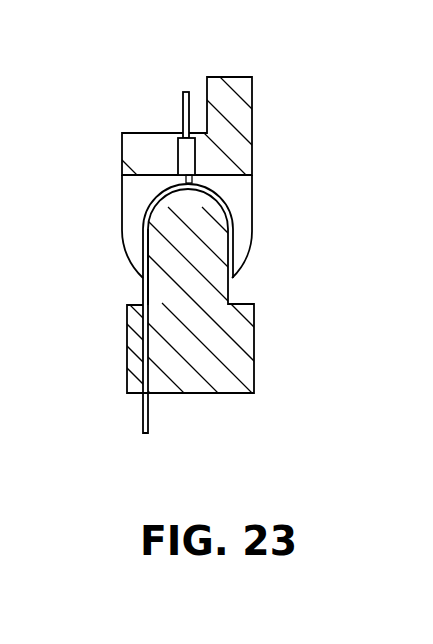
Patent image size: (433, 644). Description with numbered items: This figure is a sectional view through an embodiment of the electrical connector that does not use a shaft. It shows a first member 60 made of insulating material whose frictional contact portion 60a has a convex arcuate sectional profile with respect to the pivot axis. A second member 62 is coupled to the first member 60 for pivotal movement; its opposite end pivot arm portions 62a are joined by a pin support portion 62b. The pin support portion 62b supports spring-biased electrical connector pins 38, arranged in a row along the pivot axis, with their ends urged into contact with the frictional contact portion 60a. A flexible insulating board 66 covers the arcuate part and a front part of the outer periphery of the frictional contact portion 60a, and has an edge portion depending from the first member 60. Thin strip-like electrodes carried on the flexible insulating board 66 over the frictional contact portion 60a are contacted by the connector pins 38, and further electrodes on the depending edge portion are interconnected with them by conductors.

The spring-biased electrical connector pin 38 is at (183, 90).
The first member 60 is at (238, 356).
The frictional contact portion 60a is at (203, 214).
The second member 62 is at (253, 128).
The pivot arm portion 62a is at (253, 249).
The pin support portion 62b is at (130, 157).
The flexible insulating board 66 is at (143, 425).